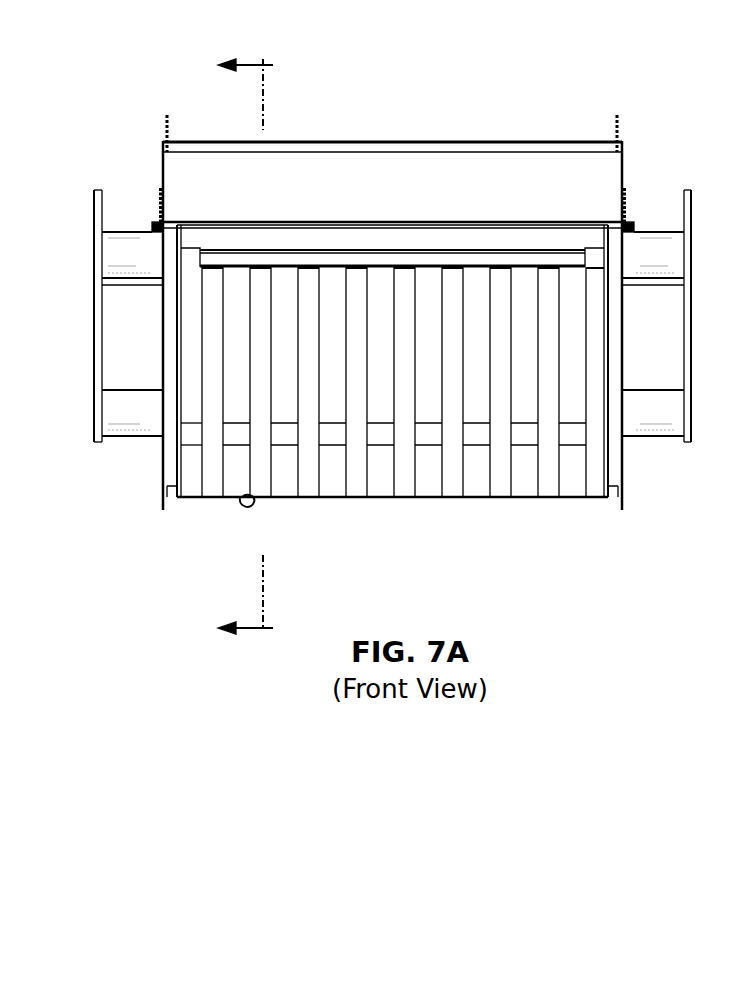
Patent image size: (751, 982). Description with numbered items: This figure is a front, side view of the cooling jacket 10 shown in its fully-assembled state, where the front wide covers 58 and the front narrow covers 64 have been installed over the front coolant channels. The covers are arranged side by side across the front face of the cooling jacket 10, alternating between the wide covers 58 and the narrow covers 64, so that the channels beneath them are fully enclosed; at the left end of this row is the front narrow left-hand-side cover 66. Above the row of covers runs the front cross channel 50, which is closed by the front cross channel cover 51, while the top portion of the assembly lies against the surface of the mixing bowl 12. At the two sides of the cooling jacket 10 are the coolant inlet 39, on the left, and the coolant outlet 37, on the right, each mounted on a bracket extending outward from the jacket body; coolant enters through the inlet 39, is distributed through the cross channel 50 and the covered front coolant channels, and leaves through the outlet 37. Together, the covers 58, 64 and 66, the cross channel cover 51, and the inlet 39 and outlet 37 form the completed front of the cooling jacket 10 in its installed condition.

The cooling jacket 10 is at (134, 78).
The surface of mixing bowl 12 is at (481, 197).
The coolant outlet 37 is at (632, 222).
The coolant inlet 39 is at (154, 220).
The front cross channel 50 is at (375, 250).
The front cross channel cover 51 is at (423, 222).
The front wide covers 58 is at (395, 412).
The front narrow covers 64 is at (404, 382).
The front narrow left-hand-side cover 66 is at (190, 382).